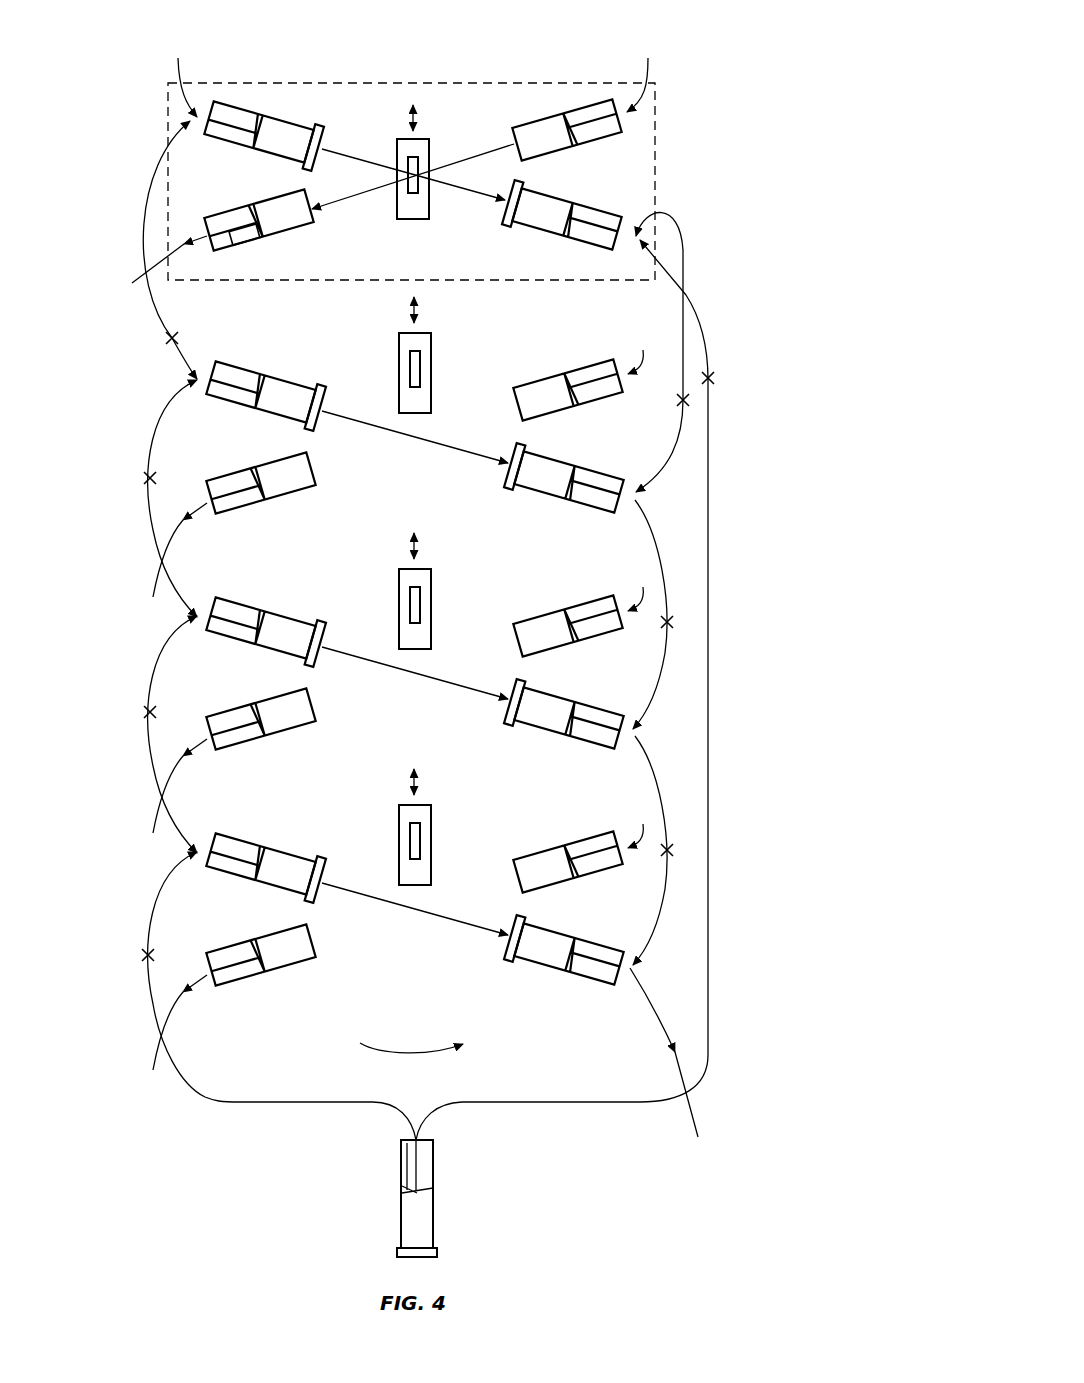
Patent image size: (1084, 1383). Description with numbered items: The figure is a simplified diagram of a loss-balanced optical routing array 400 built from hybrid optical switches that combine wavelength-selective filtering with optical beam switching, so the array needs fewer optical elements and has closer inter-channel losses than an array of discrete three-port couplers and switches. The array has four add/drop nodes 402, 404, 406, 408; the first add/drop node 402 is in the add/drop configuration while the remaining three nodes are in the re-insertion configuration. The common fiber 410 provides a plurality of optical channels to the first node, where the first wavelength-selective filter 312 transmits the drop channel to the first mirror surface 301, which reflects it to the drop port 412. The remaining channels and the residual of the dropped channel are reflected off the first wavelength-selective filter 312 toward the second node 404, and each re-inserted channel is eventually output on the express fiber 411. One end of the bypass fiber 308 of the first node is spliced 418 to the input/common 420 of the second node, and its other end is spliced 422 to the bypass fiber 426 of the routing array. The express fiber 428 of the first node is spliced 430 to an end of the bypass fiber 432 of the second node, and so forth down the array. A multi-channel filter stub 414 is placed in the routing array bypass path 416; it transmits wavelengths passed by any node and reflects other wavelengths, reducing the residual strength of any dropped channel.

The loss-balanced optical routing array 400 is at (676, 72).
The first add/drop node 402 is at (657, 148).
The second add/drop node 404 is at (113, 402).
The third add/drop node 406 is at (113, 630).
The fourth add/drop node 408 is at (113, 855).
The common fiber 410 is at (196, 116).
The drop port 412 is at (230, 242).
The first wavelength-selective filter 312 is at (316, 130).
The first mirror surface 301 is at (398, 178).
The bypass fiber 308 is at (148, 207).
The express fiber 428 is at (684, 232).
The splice 418 is at (171, 340).
The input/common 420 is at (196, 364).
The splice 422 is at (712, 378).
The splice 430 is at (680, 401).
The bypass fiber 432 is at (668, 470).
The bypass fiber 426 is at (710, 985).
The express fiber 411 is at (698, 1118).
The multi-channel filter stub 414 is at (434, 1165).
The routing array bypass path 416 is at (411, 1043).